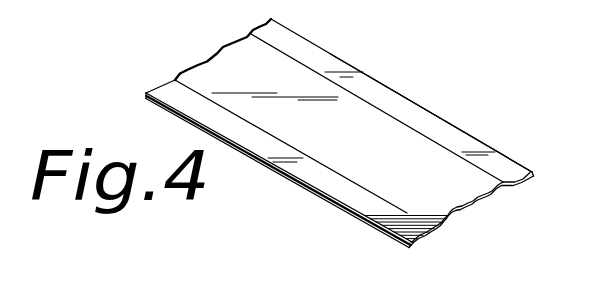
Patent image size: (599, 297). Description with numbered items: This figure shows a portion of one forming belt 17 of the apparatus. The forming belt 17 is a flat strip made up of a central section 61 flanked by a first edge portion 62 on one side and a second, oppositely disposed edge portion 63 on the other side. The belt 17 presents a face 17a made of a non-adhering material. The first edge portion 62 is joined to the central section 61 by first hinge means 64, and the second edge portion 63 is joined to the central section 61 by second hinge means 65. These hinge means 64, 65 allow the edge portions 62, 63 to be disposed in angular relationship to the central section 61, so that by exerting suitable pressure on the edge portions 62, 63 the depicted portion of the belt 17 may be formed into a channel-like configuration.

The forming belt 17 is at (148, 56).
The face 17a is at (228, 73).
The central section 61 is at (455, 190).
The first edge portion 62 is at (407, 107).
The second edge portion 63 is at (393, 225).
The first hinge means 64 is at (476, 138).
The second hinge means 65 is at (369, 194).